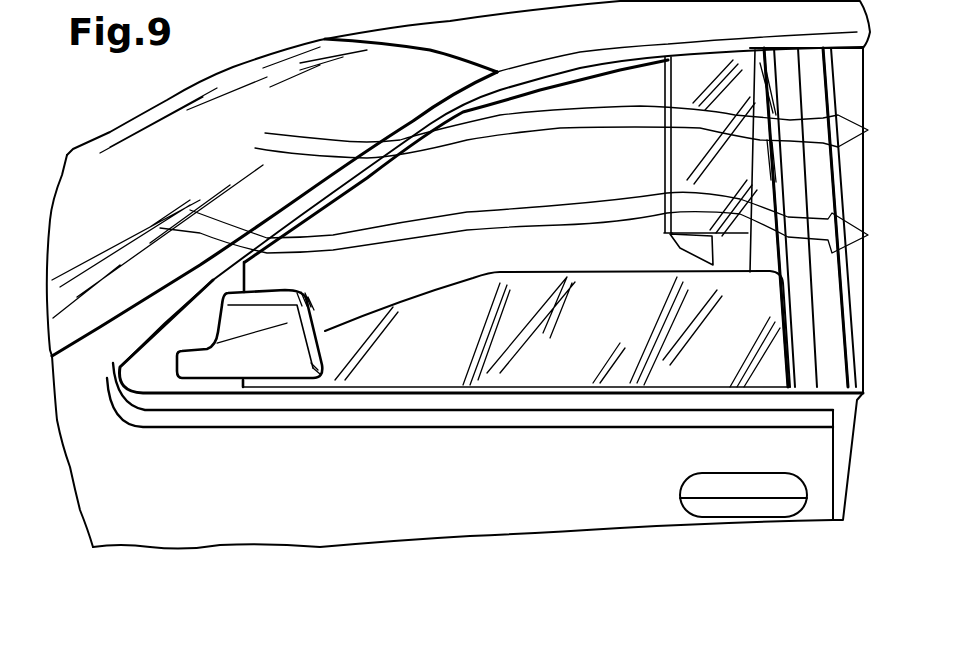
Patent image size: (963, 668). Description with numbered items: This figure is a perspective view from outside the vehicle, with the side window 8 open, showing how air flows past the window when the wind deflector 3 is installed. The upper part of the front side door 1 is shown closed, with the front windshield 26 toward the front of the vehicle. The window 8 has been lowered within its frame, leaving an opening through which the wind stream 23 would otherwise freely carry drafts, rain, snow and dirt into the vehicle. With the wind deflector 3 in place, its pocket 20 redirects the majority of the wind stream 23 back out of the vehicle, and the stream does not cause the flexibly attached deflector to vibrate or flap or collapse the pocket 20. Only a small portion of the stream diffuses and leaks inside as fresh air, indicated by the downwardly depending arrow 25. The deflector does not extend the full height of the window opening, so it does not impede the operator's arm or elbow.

The front side door 1 is at (100, 491).
The wind deflector 3 is at (662, 88).
The window 8 is at (478, 279).
The pocket 20 is at (691, 146).
The wind stream 23 is at (560, 130).
The downwardly depending arrow 25 is at (712, 248).
The front windshield 26 is at (257, 64).